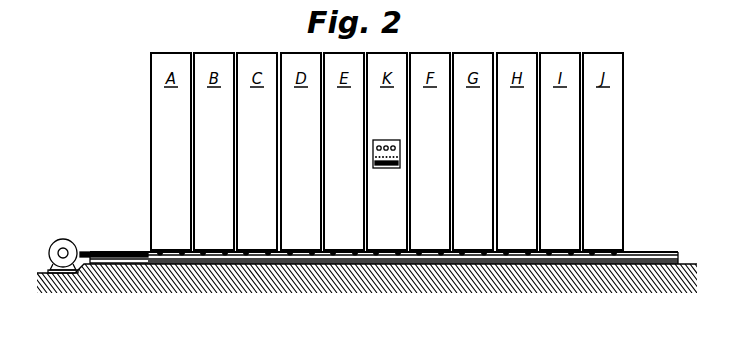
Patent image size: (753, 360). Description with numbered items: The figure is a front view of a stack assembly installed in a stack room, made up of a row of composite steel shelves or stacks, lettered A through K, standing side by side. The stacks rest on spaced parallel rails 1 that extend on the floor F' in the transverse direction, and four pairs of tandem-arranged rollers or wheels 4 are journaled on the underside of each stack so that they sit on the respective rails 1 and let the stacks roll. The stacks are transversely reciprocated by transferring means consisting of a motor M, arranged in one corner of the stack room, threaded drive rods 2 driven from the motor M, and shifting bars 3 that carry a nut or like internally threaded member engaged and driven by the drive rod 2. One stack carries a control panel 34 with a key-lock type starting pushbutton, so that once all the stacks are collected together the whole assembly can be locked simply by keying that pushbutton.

The rail 1 is at (152, 255).
The threaded drive rod 2 is at (113, 252).
The shifting bar 3 is at (645, 252).
The rollers or wheels 4 is at (265, 256).
The control panel 34 is at (385, 140).
The motor M is at (70, 240).
The floor F' is at (413, 288).